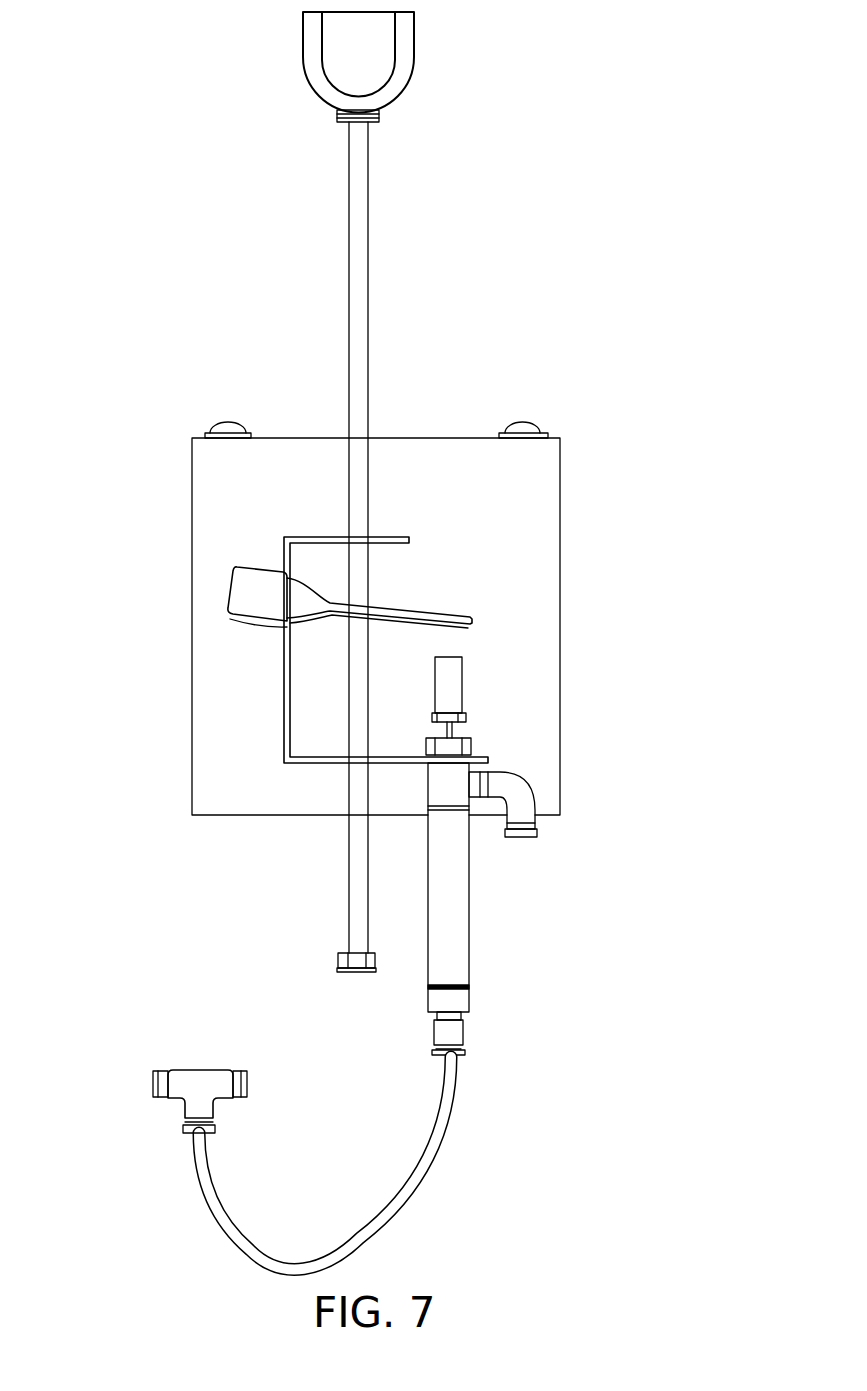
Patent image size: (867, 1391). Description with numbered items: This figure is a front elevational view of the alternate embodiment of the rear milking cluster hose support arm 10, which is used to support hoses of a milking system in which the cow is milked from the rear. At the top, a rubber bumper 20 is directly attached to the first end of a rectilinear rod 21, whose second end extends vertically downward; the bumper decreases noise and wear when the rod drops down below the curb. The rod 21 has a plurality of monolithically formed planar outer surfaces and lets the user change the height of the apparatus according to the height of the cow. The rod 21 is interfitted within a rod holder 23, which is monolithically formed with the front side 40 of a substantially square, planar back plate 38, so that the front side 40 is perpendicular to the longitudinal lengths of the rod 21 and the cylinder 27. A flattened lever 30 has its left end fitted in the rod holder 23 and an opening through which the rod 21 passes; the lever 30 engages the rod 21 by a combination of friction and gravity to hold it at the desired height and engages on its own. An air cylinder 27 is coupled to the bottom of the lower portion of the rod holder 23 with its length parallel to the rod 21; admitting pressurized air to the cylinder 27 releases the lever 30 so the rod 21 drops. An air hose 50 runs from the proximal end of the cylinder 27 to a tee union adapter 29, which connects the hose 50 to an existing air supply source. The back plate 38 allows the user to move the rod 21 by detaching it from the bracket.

The rear milking cluster hose support arm 10 is at (152, 167).
The rubber bumper 20 is at (380, 120).
The rectilinear rod 21 is at (360, 236).
The rod holder 23 is at (283, 718).
The air cylinder 27 is at (458, 921).
The tee union adapter 29 is at (200, 1083).
The flattened lever 30 is at (268, 598).
The back plate 38 is at (588, 618).
The front side of the back plate 40 is at (536, 529).
The air hose 50 is at (420, 1175).